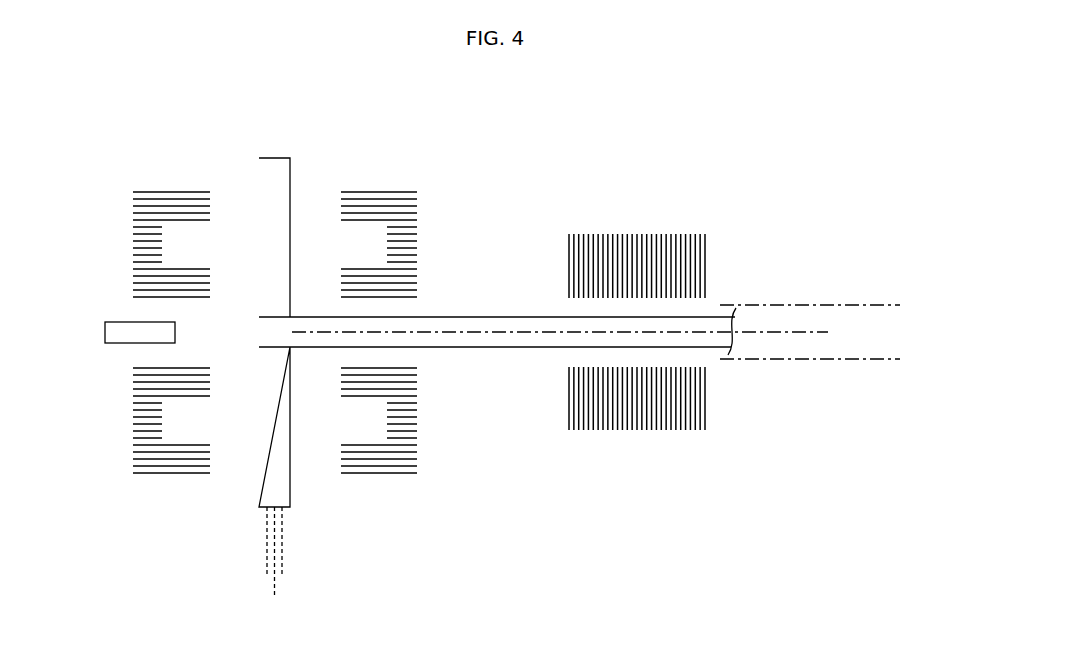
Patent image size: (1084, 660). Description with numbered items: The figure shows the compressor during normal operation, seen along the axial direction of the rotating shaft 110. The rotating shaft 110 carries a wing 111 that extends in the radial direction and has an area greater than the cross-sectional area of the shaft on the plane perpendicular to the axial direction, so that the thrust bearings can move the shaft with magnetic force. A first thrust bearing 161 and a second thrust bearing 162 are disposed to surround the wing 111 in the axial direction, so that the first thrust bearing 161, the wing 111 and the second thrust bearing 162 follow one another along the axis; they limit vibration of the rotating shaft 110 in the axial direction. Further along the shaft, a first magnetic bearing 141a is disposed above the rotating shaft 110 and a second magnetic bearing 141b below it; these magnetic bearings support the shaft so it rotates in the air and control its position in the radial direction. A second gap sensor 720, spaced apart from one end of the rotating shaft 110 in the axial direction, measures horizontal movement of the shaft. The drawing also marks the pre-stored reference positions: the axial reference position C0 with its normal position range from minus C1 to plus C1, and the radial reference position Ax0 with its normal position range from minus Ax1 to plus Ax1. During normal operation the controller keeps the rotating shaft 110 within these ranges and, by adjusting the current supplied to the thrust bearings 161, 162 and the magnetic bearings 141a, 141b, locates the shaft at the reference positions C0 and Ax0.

The rotating shaft 110 is at (492, 322).
The wing 111 is at (275, 167).
The first magnetic bearing 141a is at (632, 247).
The second magnetic bearing 141b is at (633, 410).
The first thrust bearing 161 is at (152, 213).
The second thrust bearing 162 is at (357, 213).
The second gap sensor 720 is at (120, 333).
The reference position Ax0 is at (578, 331).
The normal position range Ax1 is at (836, 331).
The reference position C0 is at (276, 563).
The normal position range C1 is at (266, 557).